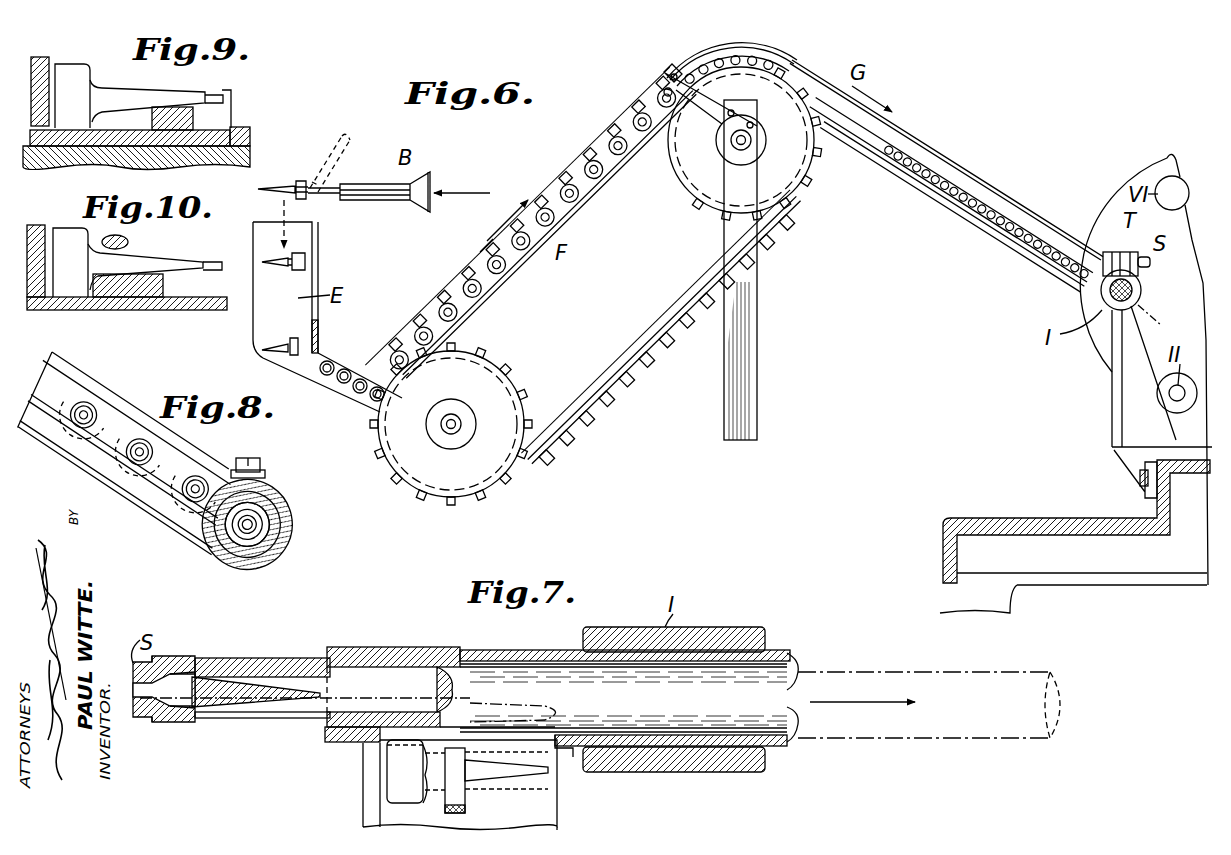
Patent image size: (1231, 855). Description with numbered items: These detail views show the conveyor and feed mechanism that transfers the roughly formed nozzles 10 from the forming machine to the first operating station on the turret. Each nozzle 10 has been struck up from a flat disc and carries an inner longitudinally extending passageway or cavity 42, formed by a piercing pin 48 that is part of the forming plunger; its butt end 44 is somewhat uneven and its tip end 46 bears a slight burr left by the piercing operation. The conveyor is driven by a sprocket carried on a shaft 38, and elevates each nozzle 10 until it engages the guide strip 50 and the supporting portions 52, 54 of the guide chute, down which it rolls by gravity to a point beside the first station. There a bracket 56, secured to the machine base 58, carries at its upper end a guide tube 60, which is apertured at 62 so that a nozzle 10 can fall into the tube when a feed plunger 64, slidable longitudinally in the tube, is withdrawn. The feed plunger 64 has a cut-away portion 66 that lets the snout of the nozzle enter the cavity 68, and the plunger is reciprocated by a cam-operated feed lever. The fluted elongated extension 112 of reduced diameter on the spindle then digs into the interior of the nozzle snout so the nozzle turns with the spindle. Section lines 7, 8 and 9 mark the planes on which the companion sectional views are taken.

In FIG. 6, the section line 7— 7 is at (1062, 231).
In FIG. 7, the section line 8— 8 is at (552, 760).
In FIG. 6, the section line 9— 9 is at (745, 30).
In FIG. 9, the nozzle 10 is at (107, 96).
In FIG. 10, the nozzle 10 is at (118, 267).
In FIG. 8, the nozzle 10 is at (78, 415).
In FIG. 6, the nozzle 10 is at (460, 283).
In FIG. 7, the nozzle 10 is at (483, 770).
In FIG. 6, the shaft 38 is at (452, 418).
In FIG. 7, the inner passageway or cavity 42 is at (220, 677).
In FIG. 9, the butt end 44 is at (62, 72).
In FIG. 10, the butt end 44 is at (58, 240).
In FIG. 8, the butt end 44 is at (93, 470).
In FIG. 9, the tip end 46 is at (228, 95).
In FIG. 10, the tip end 46 is at (207, 262).
In FIG. 8, the tip end 46 is at (77, 425).
In FIG. 6, the piercing pin 48 is at (332, 184).
In FIG. 10, the guide strip 50 is at (128, 242).
In FIG. 8, the guide strip 50 is at (100, 398).
In FIG. 6, the guide strip 50 is at (830, 86).
In FIG. 7, the guide strip 50 is at (460, 764).
In FIG. 9, the supporting portion 52 is at (128, 130).
In FIG. 6, the supporting portion 52 is at (668, 305).
In FIG. 9, the supporting portion 54 is at (203, 120).
In FIG. 10, the supporting portion 54 is at (163, 290).
In FIG. 8, the supporting portion 54 is at (147, 490).
In FIG. 6, the supporting portion 54 is at (884, 145).
In FIG. 7, the supporting portion 54 is at (387, 815).
In FIG. 6, the bracket 56 is at (577, 422).
In FIG. 7, the bracket 56 is at (690, 773).
In FIG. 6, the machine base 58 is at (1058, 518).
In FIG. 8, the guide tube 60 is at (287, 553).
In FIG. 7, the guide tube 60 is at (370, 647).
In FIG. 7, the aperture 62 is at (523, 737).
In FIG. 7, the feed plunger 64 is at (760, 698).
In FIG. 7, the cut-away portion 66 is at (277, 720).
In FIG. 7, the cavity 68 is at (382, 690).
In FIG. 7, the elongated extension 112 is at (222, 697).